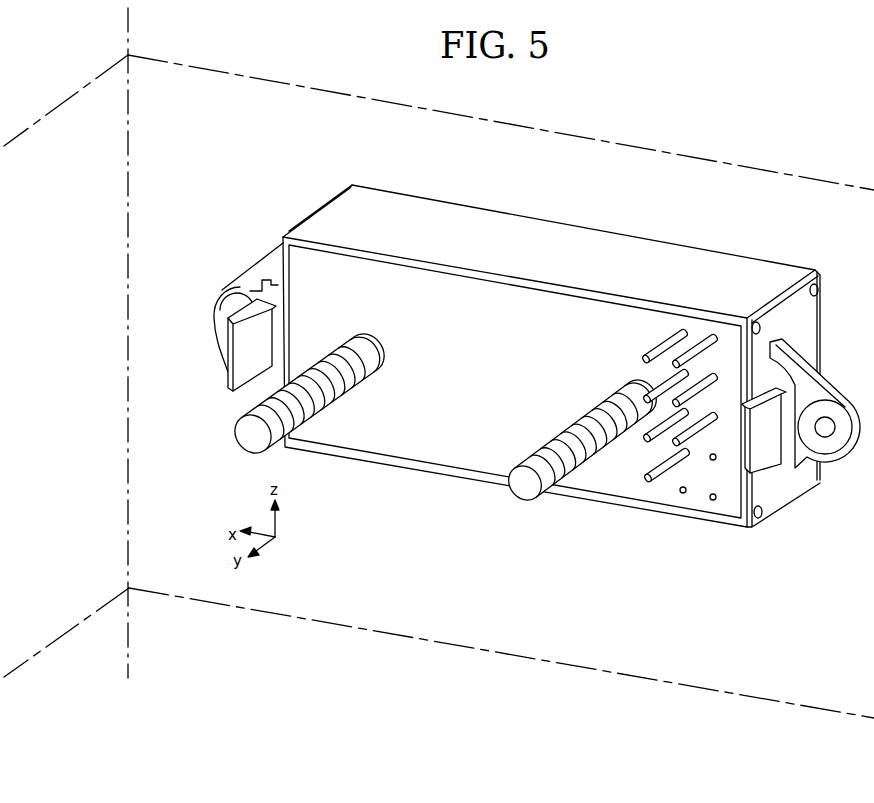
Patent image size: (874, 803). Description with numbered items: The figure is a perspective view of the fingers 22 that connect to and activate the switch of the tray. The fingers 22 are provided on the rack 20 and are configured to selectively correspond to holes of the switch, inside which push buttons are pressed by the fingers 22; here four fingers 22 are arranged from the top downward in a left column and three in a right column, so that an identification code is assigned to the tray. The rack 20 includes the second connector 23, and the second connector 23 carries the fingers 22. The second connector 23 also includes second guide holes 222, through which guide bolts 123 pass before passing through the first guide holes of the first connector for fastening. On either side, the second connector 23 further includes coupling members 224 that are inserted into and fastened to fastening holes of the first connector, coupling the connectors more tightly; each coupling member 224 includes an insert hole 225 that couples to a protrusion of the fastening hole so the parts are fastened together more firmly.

The rack 20 is at (212, 127).
The fingers 22 is at (690, 347).
The second connector 23 is at (455, 425).
The guide bolts 123 is at (257, 395).
The second guide holes 222 is at (322, 361).
The coupling members 224 is at (240, 372).
The insert hole 225 is at (222, 292).